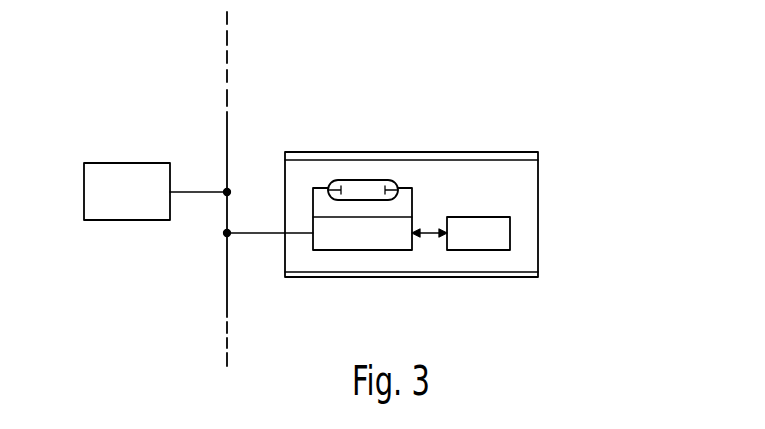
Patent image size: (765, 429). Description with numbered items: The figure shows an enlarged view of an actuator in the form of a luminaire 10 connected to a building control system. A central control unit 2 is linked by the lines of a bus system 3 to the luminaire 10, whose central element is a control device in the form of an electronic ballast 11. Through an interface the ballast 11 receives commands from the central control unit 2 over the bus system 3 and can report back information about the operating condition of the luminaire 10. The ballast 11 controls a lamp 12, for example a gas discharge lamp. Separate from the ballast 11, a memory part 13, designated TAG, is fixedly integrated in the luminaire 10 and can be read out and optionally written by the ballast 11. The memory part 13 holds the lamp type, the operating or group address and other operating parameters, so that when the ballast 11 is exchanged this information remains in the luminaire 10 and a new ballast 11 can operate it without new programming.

The central control unit 2 is at (124, 204).
The bus system 3 is at (227, 216).
The luminaire 10 is at (415, 152).
The electronic ballast 11 is at (362, 251).
The lamp 12 is at (364, 179).
The memory part 13 is at (473, 251).